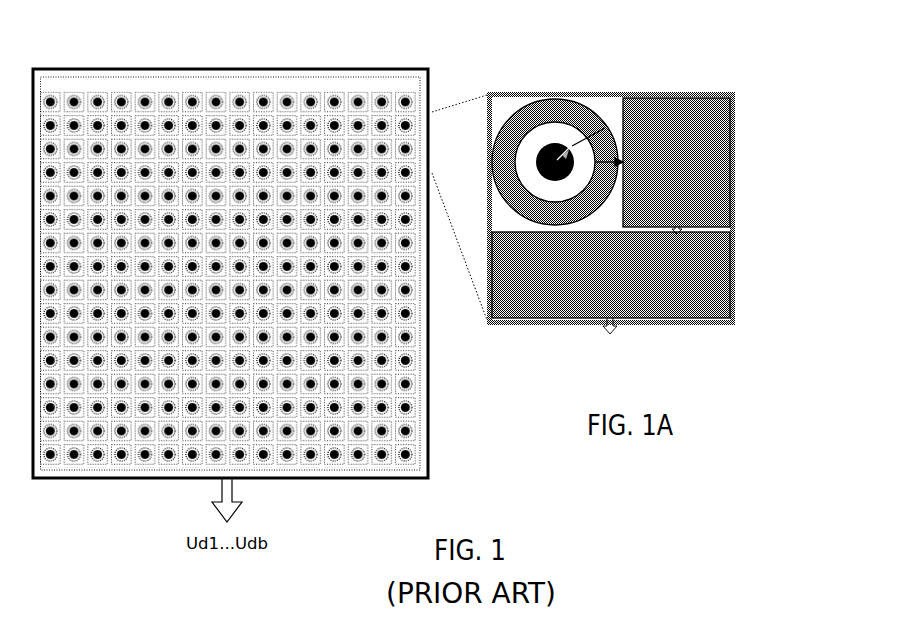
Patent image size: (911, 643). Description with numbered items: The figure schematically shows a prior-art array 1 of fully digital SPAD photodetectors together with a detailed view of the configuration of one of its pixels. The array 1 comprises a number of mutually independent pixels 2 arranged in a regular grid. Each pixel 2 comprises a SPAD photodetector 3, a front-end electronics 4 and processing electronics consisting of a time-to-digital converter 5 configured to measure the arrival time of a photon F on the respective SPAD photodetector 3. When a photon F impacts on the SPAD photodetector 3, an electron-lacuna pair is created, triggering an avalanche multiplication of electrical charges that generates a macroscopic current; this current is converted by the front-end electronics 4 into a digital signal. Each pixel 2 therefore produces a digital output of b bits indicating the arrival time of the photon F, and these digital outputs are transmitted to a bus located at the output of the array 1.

In FIG. 1, the array 1 is at (263, 239).
In FIG. 1, the pixel 2 is at (430, 355).
In FIG. 1A, the pixel 2 is at (634, 178).
In FIG. 1A, the SPAD photodetector 3 is at (531, 102).
In FIG. 1A, the front-end electronics 4 is at (693, 153).
In FIG. 1A, the time-to-digital converter 5 is at (697, 285).